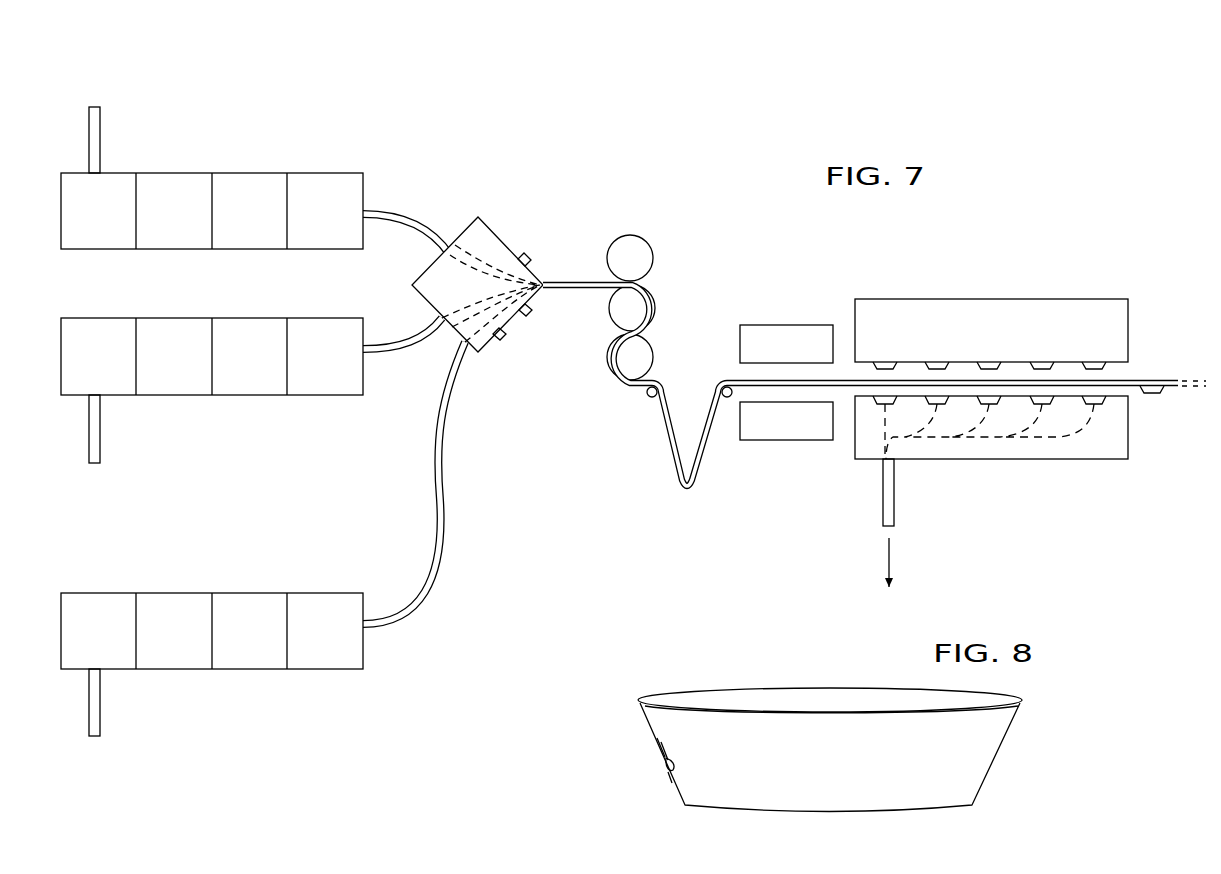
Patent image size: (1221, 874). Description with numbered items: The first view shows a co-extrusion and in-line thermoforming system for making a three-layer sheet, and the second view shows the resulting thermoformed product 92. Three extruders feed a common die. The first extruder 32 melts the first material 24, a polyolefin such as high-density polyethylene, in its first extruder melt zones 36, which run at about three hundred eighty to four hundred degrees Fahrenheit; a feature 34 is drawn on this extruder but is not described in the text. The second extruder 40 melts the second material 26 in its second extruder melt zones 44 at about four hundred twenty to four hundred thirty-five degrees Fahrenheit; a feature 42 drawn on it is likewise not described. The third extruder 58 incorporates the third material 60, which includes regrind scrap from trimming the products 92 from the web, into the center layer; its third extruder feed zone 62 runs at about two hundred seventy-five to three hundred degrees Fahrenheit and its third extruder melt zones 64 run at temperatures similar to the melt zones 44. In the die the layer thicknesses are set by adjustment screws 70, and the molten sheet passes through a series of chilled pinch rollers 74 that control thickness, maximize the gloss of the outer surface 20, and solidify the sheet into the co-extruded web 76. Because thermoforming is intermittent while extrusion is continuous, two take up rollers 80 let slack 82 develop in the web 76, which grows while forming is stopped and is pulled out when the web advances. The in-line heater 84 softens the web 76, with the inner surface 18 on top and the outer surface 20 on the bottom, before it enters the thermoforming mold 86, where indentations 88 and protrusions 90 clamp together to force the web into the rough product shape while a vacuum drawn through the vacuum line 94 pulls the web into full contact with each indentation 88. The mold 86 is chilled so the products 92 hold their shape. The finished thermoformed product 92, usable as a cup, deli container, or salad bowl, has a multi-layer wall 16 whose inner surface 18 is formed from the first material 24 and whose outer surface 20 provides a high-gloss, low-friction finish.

In FIG. 8, the multi-layer wall 16 is at (992, 764).
In FIG. 7, the inner surface 18 is at (735, 378).
In FIG. 8, the inner surface 18 is at (660, 752).
In FIG. 7, the outer surface 20 is at (825, 390).
In FIG. 8, the outer surface 20 is at (670, 782).
In FIG. 7, the first material 24 is at (95, 85).
In FIG. 7, the second material 26 is at (95, 754).
In FIG. 7, the first extruder 32 is at (165, 171).
In FIG. 7, the first extruder hopper 34 is at (85, 250).
In FIG. 7, the first extruder melt zones 36 is at (312, 250).
In FIG. 7, the second extruder 40 is at (84, 590).
In FIG. 7, the third extruder hopper 42 is at (60, 651).
In FIG. 7, the second extruder melt zones 44 is at (312, 670).
In FIG. 7, the third extruder 58 is at (178, 316).
In FIG. 7, the third material 60 is at (95, 484).
In FIG. 7, the third extruder feed zone 62 is at (90, 317).
In FIG. 7, the third extruder melt zones 64 is at (312, 396).
In FIG. 7, the adjustment screws 70 is at (528, 255).
In FIG. 7, the pinch rollers 74 is at (645, 258).
In FIG. 7, the co-extruded web 76 is at (772, 391).
In FIG. 7, the take up rollers 80 is at (722, 400).
In FIG. 7, the slack 82 is at (673, 472).
In FIG. 7, the in-line heater 84 is at (777, 325).
In FIG. 7, the thermoforming mold 86 is at (990, 298).
In FIG. 7, the indentations 88 is at (1045, 405).
In FIG. 7, the protrusions 90 is at (1095, 361).
In FIG. 7, the thermoformed product 92 is at (1156, 396).
In FIG. 8, the thermoformed product 92 is at (1045, 730).
In FIG. 7, the vacuum line 94 is at (881, 492).